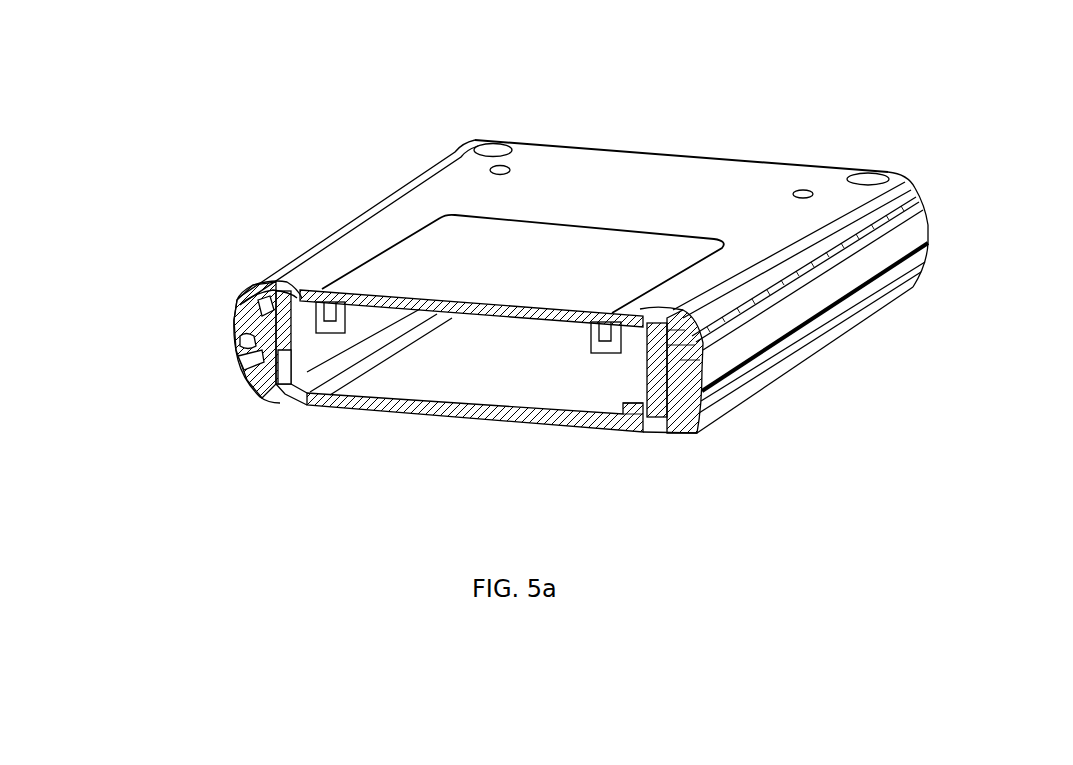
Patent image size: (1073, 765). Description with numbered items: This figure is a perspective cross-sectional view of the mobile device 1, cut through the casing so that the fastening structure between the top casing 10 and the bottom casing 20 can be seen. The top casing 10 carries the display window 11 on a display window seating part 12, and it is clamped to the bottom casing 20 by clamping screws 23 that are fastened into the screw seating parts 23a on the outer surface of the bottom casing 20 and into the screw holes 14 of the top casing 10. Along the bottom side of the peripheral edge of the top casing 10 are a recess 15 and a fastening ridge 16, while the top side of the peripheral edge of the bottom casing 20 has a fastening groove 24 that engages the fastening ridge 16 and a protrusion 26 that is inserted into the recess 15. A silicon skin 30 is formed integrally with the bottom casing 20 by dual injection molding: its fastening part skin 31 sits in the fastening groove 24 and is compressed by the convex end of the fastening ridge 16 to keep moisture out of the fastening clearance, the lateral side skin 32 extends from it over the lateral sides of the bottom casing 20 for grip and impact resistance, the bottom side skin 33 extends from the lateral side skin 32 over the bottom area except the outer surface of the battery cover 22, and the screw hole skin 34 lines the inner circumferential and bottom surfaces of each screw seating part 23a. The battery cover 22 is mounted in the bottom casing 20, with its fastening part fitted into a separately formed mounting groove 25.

The mobile device 1 is at (690, 136).
The top casing 10 is at (940, 292).
The display window 11 is at (447, 410).
The display window seating part 12 is at (635, 422).
The screw hole 14 is at (282, 403).
The recess 15 is at (246, 366).
The fastening ridge 16 is at (238, 357).
The bottom casing 20 is at (933, 175).
The battery cover 22 is at (450, 227).
The clamping screw 23 is at (240, 320).
The screw seating part 23a is at (878, 176).
The fastening groove 24 is at (240, 342).
The mounting groove 25 is at (598, 352).
The protrusion 26 is at (805, 188).
The silicon skin 30 is at (853, 288).
The fastening part skin 31 is at (713, 393).
The lateral side skin 32 is at (880, 254).
The bottom side skin 33 is at (583, 166).
The screw hole skin 34 is at (872, 168).